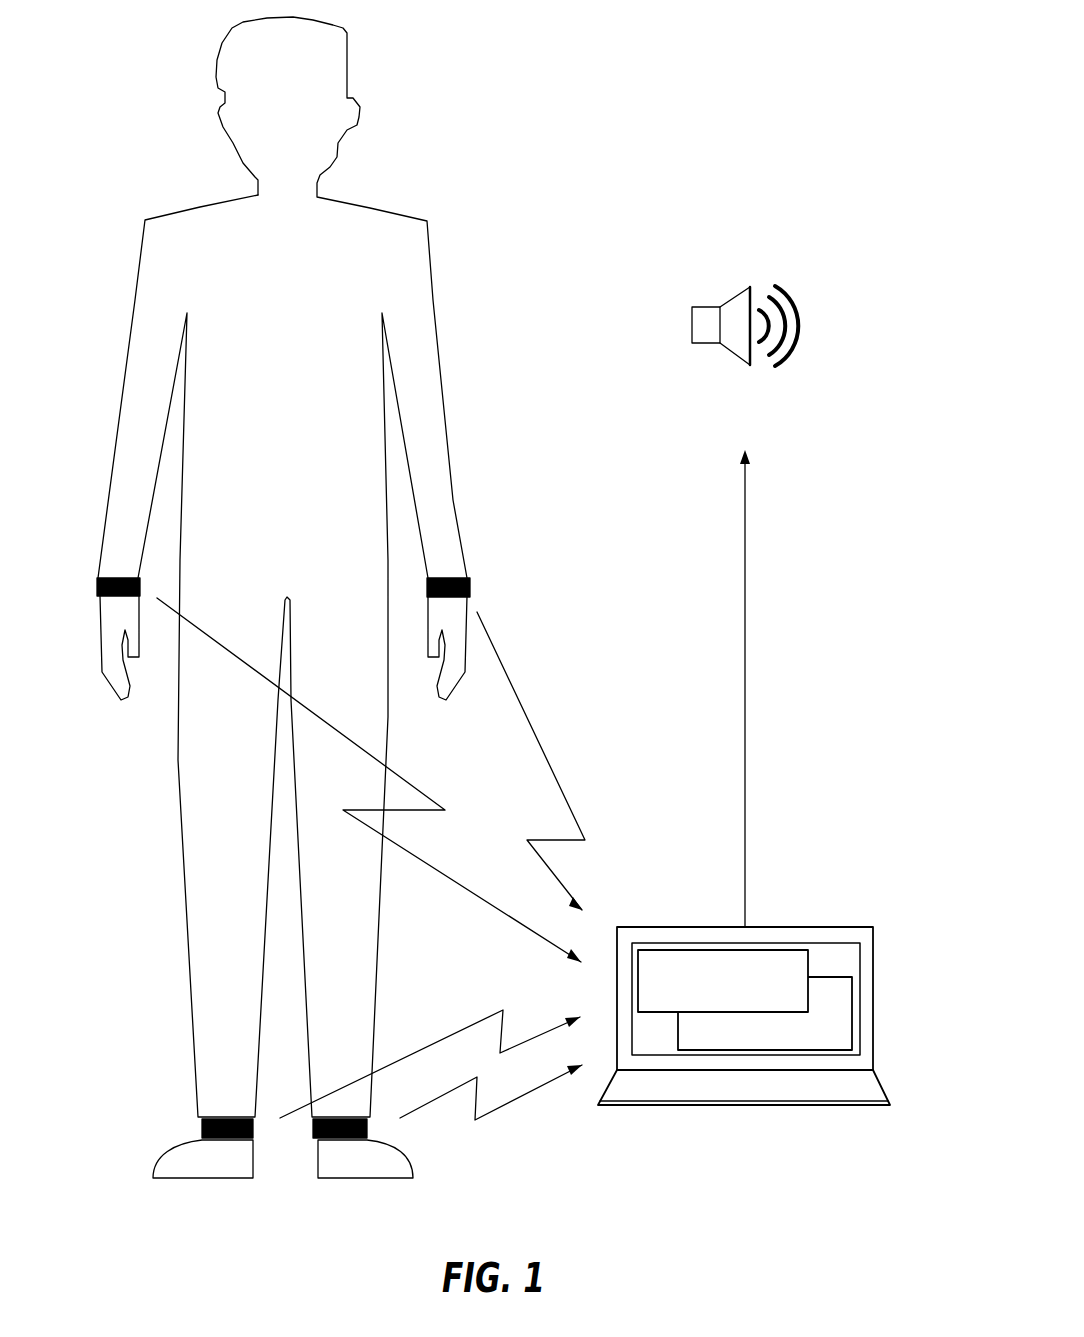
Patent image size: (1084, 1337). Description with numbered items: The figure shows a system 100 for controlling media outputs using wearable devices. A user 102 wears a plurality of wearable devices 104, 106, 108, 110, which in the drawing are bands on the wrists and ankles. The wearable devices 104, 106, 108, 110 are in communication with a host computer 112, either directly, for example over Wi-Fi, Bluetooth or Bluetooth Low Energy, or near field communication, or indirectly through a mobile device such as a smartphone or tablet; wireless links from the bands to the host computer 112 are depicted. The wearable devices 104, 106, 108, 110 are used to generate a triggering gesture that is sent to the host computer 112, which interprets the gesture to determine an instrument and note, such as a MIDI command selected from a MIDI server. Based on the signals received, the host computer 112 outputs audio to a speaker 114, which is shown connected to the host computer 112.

The system 100 is at (764, 98).
The user 102 is at (195, 210).
The wearable device 104 is at (140, 578).
The wearable device 106 is at (467, 578).
The wearable device 108 is at (240, 1138).
The wearable device 110 is at (363, 1132).
The host computer 112 is at (790, 927).
The speaker 114 is at (750, 287).